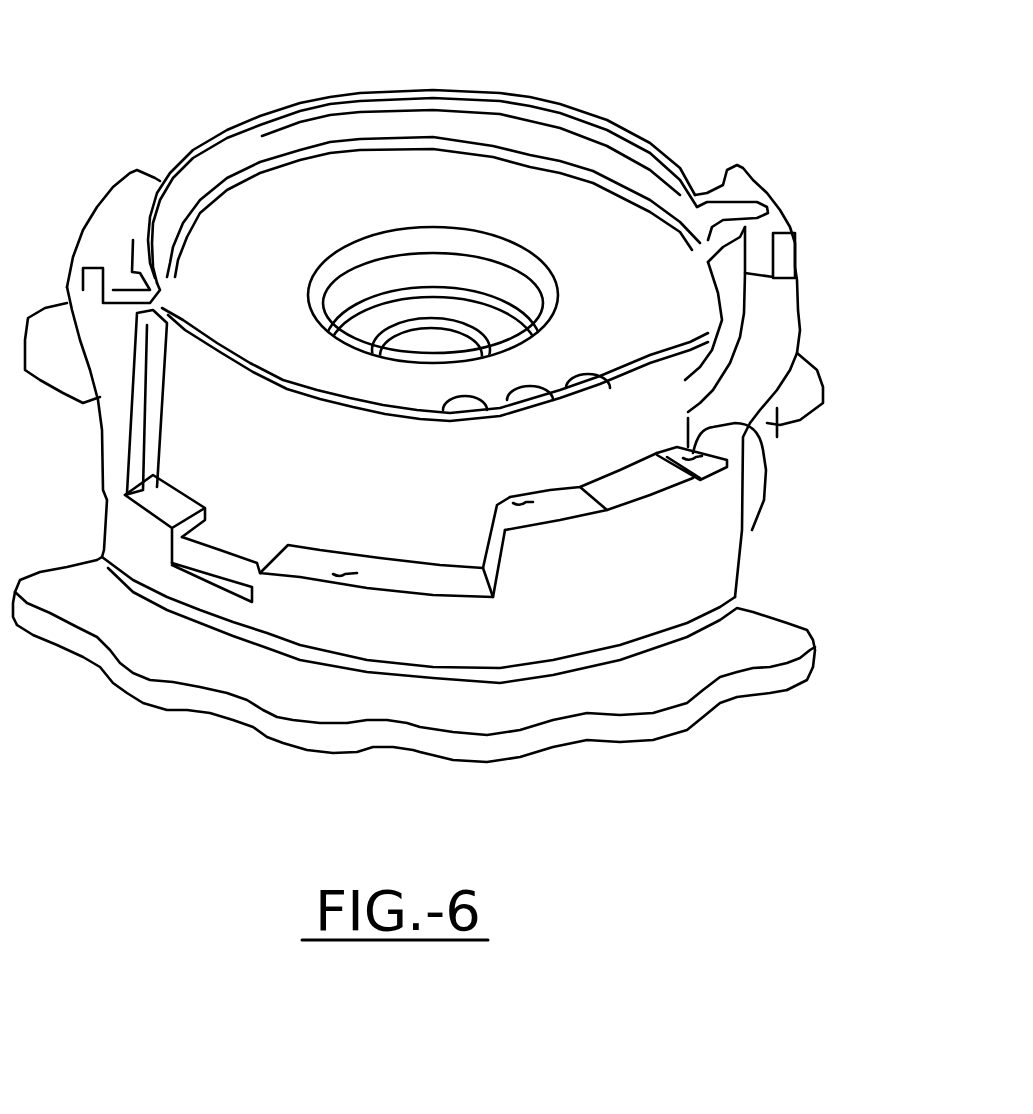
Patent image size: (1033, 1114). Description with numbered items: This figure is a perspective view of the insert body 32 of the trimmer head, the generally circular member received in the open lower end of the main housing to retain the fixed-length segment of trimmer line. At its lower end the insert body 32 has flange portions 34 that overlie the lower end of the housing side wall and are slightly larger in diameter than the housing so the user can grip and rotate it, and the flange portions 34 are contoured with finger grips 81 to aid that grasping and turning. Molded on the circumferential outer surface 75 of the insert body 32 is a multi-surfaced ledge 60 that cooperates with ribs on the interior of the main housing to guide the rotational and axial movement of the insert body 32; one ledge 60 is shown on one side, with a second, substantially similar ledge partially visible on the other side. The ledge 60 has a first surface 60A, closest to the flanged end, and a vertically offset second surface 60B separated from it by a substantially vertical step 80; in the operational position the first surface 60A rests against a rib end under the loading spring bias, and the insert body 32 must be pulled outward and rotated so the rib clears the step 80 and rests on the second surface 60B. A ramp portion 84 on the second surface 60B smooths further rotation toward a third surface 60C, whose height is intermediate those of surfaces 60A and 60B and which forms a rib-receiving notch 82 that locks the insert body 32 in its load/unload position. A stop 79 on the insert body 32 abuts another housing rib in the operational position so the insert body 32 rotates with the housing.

The insert body 32 is at (607, 120).
The stop 79 is at (797, 252).
The circumferential outer surface 75 is at (141, 366).
The multi-surfaced ledge 60 is at (308, 547).
The first surface 60A is at (353, 570).
The vertical step 80 is at (490, 537).
The second surface 60B is at (530, 497).
The ramp portion 84 is at (598, 480).
The rib-receiving notch 82 is at (683, 458).
The third surface 60C is at (757, 445).
The flange portions 34 is at (455, 685).
The finger grips 81 is at (433, 754).